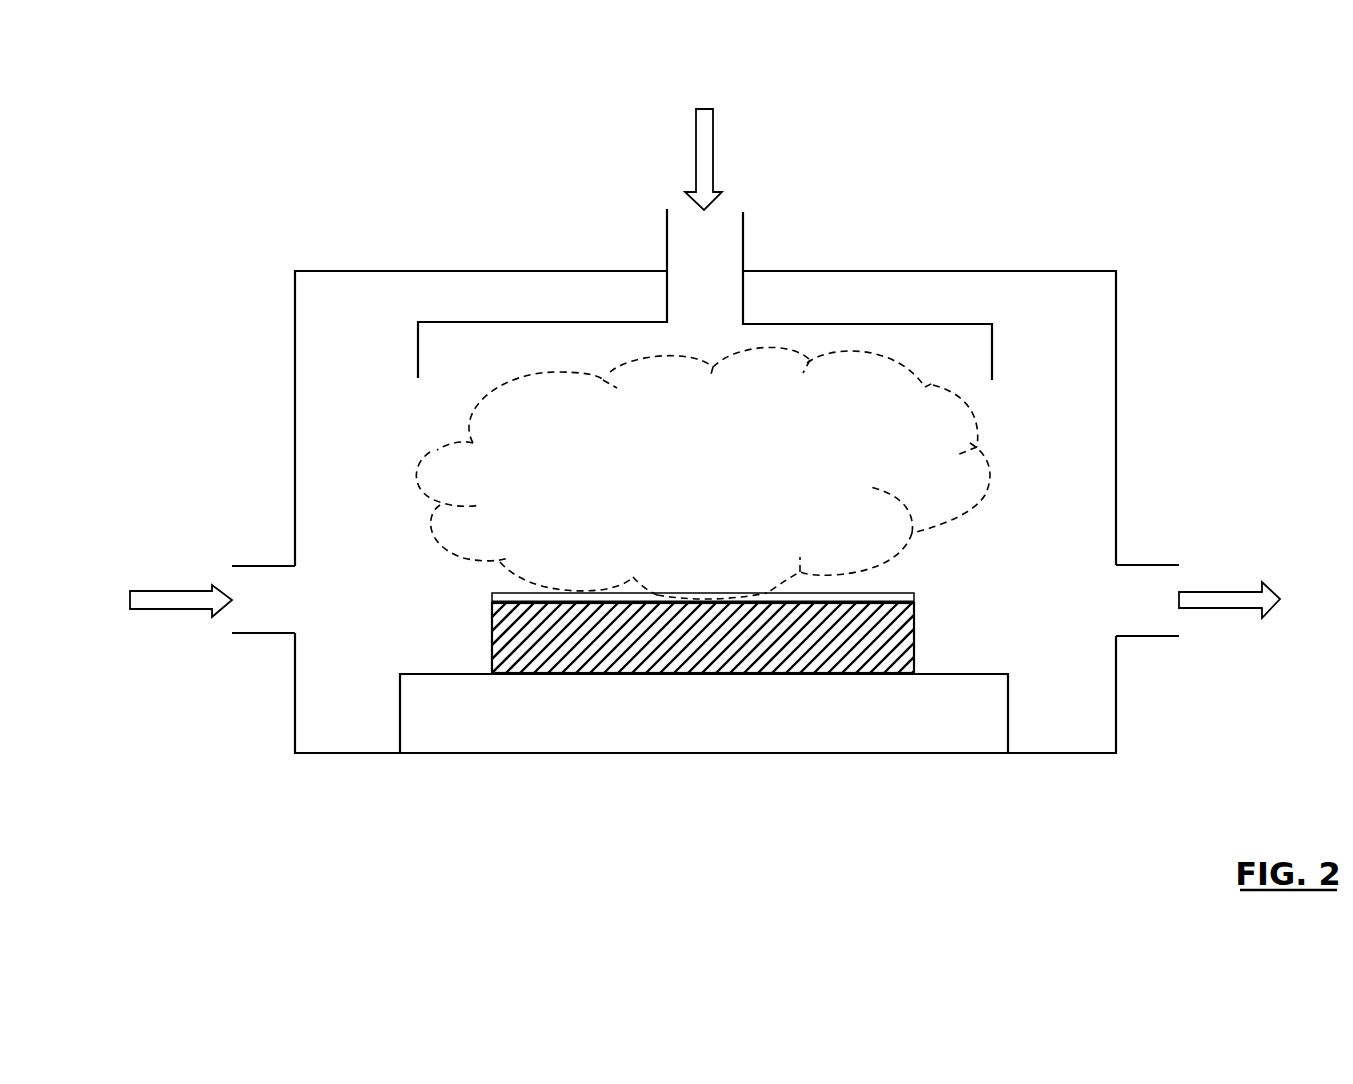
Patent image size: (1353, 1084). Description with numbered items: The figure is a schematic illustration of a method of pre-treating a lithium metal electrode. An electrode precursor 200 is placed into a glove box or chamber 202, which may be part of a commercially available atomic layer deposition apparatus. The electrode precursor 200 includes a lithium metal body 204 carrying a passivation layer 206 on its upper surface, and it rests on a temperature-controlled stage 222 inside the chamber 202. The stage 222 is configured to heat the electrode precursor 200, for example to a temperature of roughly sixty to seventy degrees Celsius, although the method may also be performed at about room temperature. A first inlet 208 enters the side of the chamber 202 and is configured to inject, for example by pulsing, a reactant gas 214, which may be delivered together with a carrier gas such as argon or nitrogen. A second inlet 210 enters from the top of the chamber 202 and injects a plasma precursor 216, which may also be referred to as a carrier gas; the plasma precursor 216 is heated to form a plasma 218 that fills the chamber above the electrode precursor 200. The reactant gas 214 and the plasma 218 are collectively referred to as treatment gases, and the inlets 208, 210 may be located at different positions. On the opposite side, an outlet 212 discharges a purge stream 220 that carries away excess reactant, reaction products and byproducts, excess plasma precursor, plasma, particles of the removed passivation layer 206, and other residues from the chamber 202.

The electrode precursor 200 is at (925, 637).
The chamber 202 is at (1060, 313).
The lithium metal body 204 is at (503, 655).
The passivation layer 206 is at (490, 597).
The first inlet 208 is at (267, 610).
The second inlet 210 is at (712, 243).
The outlet 212 is at (1140, 592).
The reactant gas 214 is at (172, 598).
The plasma precursor 216 is at (707, 141).
The plasma 218 is at (480, 462).
The purge stream 220 is at (1233, 597).
The temperature-controlled stage 222 is at (753, 731).